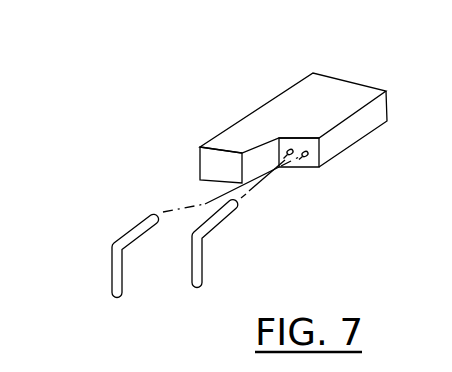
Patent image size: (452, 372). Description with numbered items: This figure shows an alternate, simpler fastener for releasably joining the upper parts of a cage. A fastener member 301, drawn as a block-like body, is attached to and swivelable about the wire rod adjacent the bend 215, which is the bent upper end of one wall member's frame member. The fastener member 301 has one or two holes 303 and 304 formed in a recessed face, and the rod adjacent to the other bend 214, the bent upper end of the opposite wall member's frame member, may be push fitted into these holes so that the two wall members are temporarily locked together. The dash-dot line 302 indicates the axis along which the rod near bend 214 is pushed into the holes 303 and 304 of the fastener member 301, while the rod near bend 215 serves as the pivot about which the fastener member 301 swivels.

The fastener member 301 is at (342, 85).
The lead axis line 302 is at (157, 214).
The hole 303 is at (289, 150).
The hole 304 is at (323, 158).
The bend 214 is at (215, 219).
The bend 215 is at (110, 246).